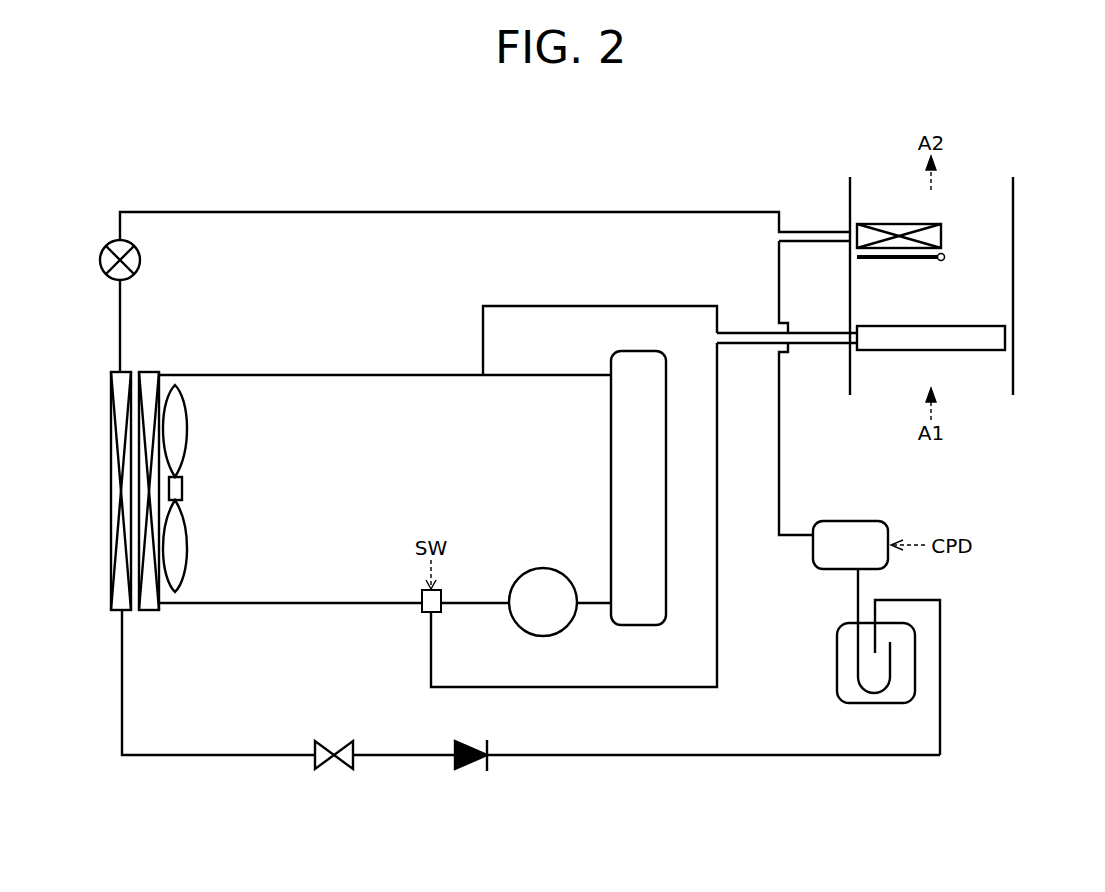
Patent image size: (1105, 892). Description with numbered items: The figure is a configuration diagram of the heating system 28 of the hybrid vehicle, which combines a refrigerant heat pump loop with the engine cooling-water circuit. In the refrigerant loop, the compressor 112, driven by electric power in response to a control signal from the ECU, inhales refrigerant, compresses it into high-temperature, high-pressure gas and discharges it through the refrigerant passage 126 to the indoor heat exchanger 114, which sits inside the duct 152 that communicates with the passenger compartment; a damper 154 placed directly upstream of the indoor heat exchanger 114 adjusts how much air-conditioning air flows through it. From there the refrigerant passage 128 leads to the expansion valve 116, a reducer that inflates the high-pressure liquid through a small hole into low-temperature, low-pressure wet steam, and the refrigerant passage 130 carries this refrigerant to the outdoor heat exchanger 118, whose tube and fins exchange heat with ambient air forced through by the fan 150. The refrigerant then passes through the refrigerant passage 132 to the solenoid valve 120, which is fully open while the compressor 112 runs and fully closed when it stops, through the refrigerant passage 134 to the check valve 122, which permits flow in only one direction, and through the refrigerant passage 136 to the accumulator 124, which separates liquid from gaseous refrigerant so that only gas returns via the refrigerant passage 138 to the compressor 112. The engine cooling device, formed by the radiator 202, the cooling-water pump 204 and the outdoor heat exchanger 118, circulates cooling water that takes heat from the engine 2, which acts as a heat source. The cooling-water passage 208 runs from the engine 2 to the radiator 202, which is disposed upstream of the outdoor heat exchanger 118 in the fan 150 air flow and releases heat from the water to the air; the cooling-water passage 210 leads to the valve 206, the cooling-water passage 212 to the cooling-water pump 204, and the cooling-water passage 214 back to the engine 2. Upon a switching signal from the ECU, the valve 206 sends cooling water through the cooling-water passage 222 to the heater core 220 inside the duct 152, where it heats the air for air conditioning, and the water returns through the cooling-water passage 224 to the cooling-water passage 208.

The heating system 28 is at (200, 159).
The engine 2 is at (666, 487).
The compressor 112 is at (870, 521).
The indoor heat exchanger 114 is at (893, 230).
The expansion valve 116 is at (100, 261).
The outdoor heat exchanger 118 is at (115, 370).
The solenoid valve 120 is at (319, 764).
The check valve 122 is at (459, 764).
The accumulator 124 is at (843, 646).
The refrigerant passage 126 is at (782, 302).
The refrigerant passage 128 is at (663, 210).
The refrigerant passage 130 is at (120, 308).
The refrigerant passage 132 is at (208, 757).
The refrigerant passage 134 is at (388, 758).
The refrigerant passage 136 is at (668, 757).
The refrigerant passage 138 is at (858, 598).
The fan 150 is at (190, 565).
The duct 152 is at (1014, 238).
The damper 154 is at (873, 261).
The radiator 202 is at (148, 372).
The cooling-water pump 204 is at (544, 636).
The valve 206 is at (420, 608).
The cooling-water passage 208 is at (557, 374).
The cooling-water passage 210 is at (268, 605).
The cooling-water passage 212 is at (493, 606).
The cooling-water passage 214 is at (597, 606).
The heater core 220 is at (1000, 338).
The cooling-water passage 222 is at (563, 689).
The cooling-water passage 224 is at (640, 306).